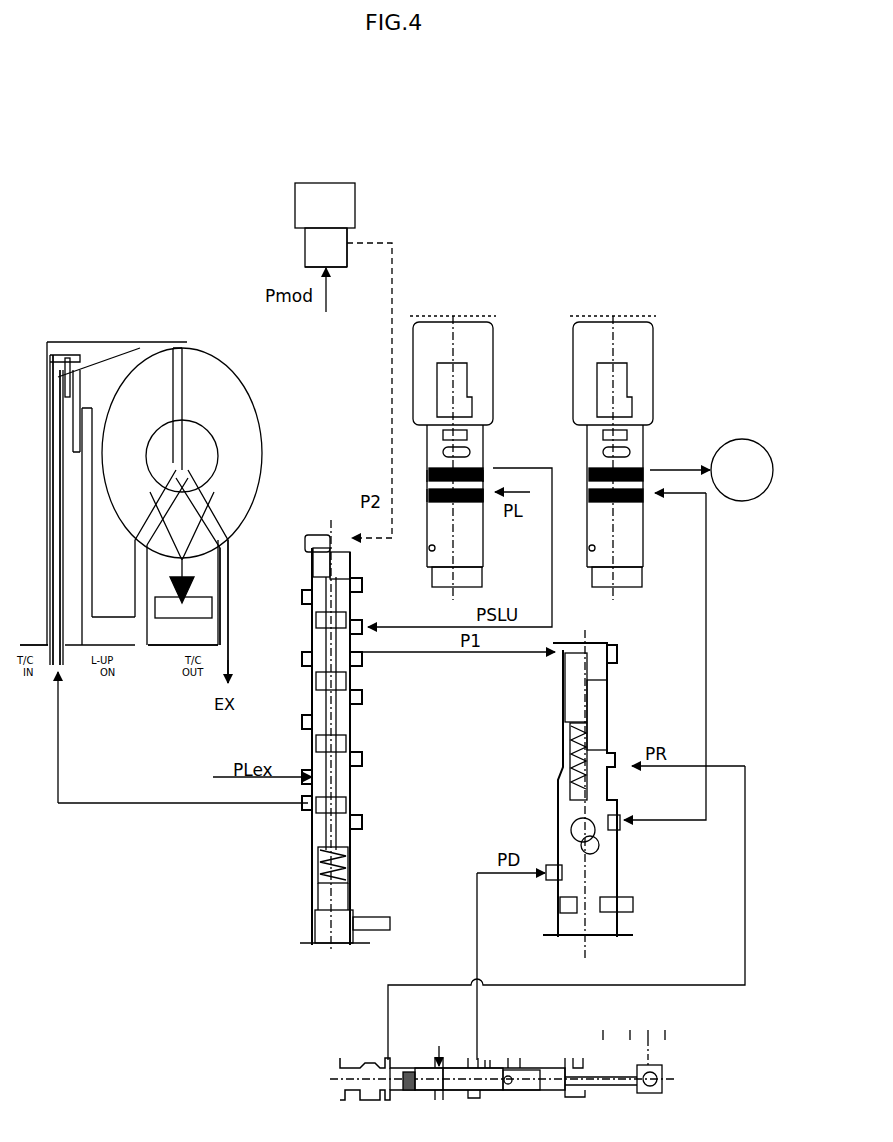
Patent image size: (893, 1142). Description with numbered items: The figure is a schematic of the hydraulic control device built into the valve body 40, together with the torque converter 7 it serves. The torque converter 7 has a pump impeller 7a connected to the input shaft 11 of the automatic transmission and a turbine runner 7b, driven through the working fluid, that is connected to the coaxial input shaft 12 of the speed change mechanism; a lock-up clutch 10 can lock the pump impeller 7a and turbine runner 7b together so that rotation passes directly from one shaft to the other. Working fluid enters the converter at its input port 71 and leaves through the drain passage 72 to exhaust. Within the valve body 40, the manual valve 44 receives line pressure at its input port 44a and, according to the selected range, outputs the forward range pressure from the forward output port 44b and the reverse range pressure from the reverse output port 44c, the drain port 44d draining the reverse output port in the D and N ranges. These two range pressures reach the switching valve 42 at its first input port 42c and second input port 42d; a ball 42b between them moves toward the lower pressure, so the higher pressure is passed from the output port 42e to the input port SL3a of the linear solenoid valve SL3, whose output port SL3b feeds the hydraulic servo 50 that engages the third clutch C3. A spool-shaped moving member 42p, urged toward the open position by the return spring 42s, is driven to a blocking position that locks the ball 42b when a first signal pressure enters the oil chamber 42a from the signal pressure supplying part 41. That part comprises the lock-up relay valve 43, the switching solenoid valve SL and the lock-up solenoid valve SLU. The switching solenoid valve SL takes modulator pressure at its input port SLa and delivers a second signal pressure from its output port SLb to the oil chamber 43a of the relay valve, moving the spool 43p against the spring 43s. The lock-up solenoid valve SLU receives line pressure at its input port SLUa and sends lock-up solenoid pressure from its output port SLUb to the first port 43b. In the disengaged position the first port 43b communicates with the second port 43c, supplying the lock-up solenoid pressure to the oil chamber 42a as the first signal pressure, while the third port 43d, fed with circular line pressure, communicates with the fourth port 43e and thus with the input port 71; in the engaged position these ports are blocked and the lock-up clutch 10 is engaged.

The valve body 40 is at (583, 118).
The signal pressure supplying part 41 is at (440, 230).
The torque converter 7 is at (176, 449).
The pump impeller 7a is at (212, 352).
The turbine runner 7b is at (153, 348).
The lock-up clutch 10 is at (58, 332).
The input shaft 11 is at (30, 640).
The input shaft 12 is at (168, 648).
The input port 71 is at (62, 668).
The drain oil passage 72 is at (236, 663).
The switching valve 42 is at (602, 789).
The oil chamber 42a is at (590, 645).
The ball 42b is at (575, 832).
The first input port 42c is at (553, 883).
The second input port 42d is at (612, 762).
The output port 42e is at (620, 835).
The moving member 42p is at (575, 695).
The return spring 42s is at (565, 770).
The lock-up relay valve 43 is at (327, 735).
The oil chamber 43a is at (350, 555).
The first port 43b is at (357, 625).
The second port 43c is at (355, 656).
The third port 43d is at (306, 770).
The fourth port 43e is at (306, 806).
The spool 43p is at (312, 563).
The spring 43s is at (318, 877).
The manual valve 44 is at (465, 1052).
The input port 44a is at (443, 1058).
The forward output port 44b is at (485, 1062).
The reverse output port 44c is at (388, 1062).
The drain port 44d is at (345, 1088).
The hydraulic servo 50 is at (742, 440).
The switching solenoid valve SL is at (336, 174).
The input port SLa is at (330, 268).
The output port SLb is at (348, 243).
The lock-up solenoid valve SLU is at (481, 428).
The input port SLUa is at (487, 497).
The output port SLUb is at (492, 470).
The linear solenoid valve SL3 is at (640, 428).
The input port SL3a is at (648, 497).
The output port SL3b is at (652, 470).
The third clutch C3 is at (735, 438).